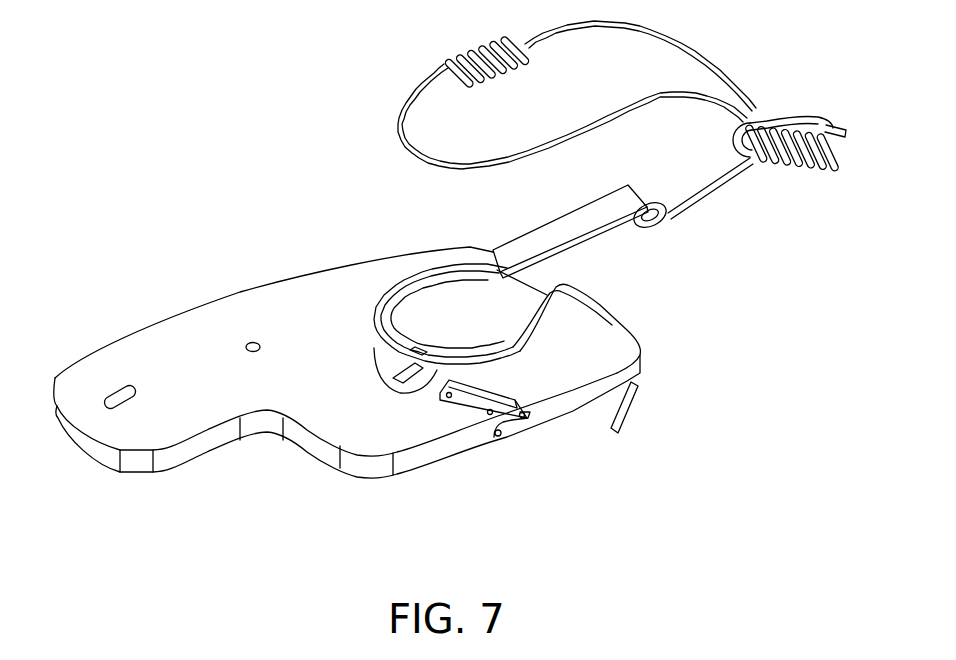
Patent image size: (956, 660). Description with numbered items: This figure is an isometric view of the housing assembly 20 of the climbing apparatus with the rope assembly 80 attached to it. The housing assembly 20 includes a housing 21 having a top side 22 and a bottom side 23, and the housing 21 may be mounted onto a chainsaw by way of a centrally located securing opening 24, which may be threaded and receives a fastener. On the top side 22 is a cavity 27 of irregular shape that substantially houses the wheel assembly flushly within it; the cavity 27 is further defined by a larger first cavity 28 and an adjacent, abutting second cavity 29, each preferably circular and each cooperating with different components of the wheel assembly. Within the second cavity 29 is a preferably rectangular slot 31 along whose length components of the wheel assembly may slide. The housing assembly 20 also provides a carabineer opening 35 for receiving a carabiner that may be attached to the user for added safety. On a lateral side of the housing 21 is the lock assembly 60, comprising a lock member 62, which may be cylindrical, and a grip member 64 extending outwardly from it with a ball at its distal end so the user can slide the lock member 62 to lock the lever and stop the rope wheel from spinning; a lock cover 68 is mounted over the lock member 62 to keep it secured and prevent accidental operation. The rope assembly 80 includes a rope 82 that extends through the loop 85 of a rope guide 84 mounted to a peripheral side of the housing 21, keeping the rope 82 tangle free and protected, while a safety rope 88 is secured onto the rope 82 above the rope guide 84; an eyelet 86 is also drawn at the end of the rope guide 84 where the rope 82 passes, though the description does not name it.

The housing assembly 20 is at (308, 268).
The housing 21 is at (135, 461).
The top side 22 is at (175, 365).
The bottom side 23 is at (588, 405).
The securing opening 24 is at (253, 342).
The cavity 27 is at (395, 290).
The first cavity 28 is at (457, 303).
The second cavity 29 is at (383, 383).
The slot 31 is at (390, 364).
The carabineer opening 35 is at (110, 390).
The lock assembly 60 is at (513, 391).
The lock member 62 is at (527, 412).
The grip member 64 is at (497, 424).
The lock cover 68 is at (455, 400).
The rope assembly 80 is at (492, 236).
The rope 82 is at (705, 205).
The rope guide 84 is at (600, 198).
The loop 85 is at (558, 224).
The eyelet 86 is at (655, 232).
The safety rope 88 is at (597, 121).